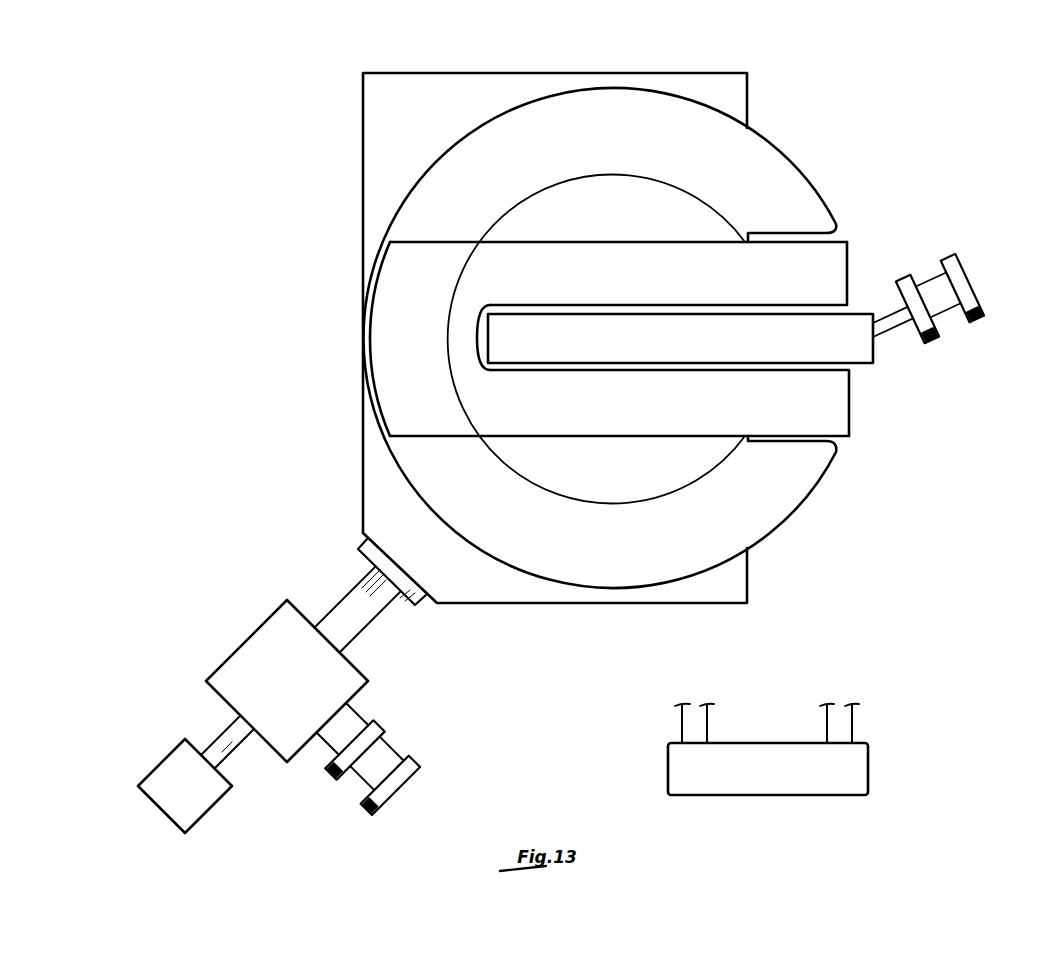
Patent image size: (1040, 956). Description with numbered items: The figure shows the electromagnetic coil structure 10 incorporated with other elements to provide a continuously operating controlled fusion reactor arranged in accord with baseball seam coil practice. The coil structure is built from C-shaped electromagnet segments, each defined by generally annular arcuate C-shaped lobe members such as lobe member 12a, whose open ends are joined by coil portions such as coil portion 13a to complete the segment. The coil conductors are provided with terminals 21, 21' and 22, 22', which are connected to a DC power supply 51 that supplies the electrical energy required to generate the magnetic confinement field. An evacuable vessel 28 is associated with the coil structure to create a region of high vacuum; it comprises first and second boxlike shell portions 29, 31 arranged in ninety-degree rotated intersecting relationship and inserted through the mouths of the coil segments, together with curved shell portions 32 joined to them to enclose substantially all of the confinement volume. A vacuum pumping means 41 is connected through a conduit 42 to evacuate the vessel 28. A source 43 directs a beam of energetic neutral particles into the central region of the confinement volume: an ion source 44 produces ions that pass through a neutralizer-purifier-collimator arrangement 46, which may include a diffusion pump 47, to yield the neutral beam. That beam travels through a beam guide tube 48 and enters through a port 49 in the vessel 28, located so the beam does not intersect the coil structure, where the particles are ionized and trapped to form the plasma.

The electromagnetic coil structure 10 is at (758, 115).
The C-shaped lobe member 12a is at (696, 554).
The coil portion 13a is at (421, 338).
The terminal 21 is at (702, 255).
The terminal 21' is at (702, 407).
The terminal 22 is at (352, 259).
The terminal 22' is at (350, 405).
The vessel 28 is at (357, 511).
The boxlike shell portion 29 is at (855, 312).
The boxlike shell portion 31 is at (363, 97).
The curved shell portion 32 is at (595, 219).
The vacuum pumping means 41 is at (952, 308).
The conduit 42 is at (888, 336).
The source 43 is at (133, 777).
The ion source 44 is at (175, 797).
The neutralizer-purifier-collimator arrangement 46 is at (277, 692).
The diffusion pump 47 is at (370, 778).
The beam guide tube 48 is at (357, 616).
The port 49 is at (413, 598).
The DC power supply 51 is at (868, 776).